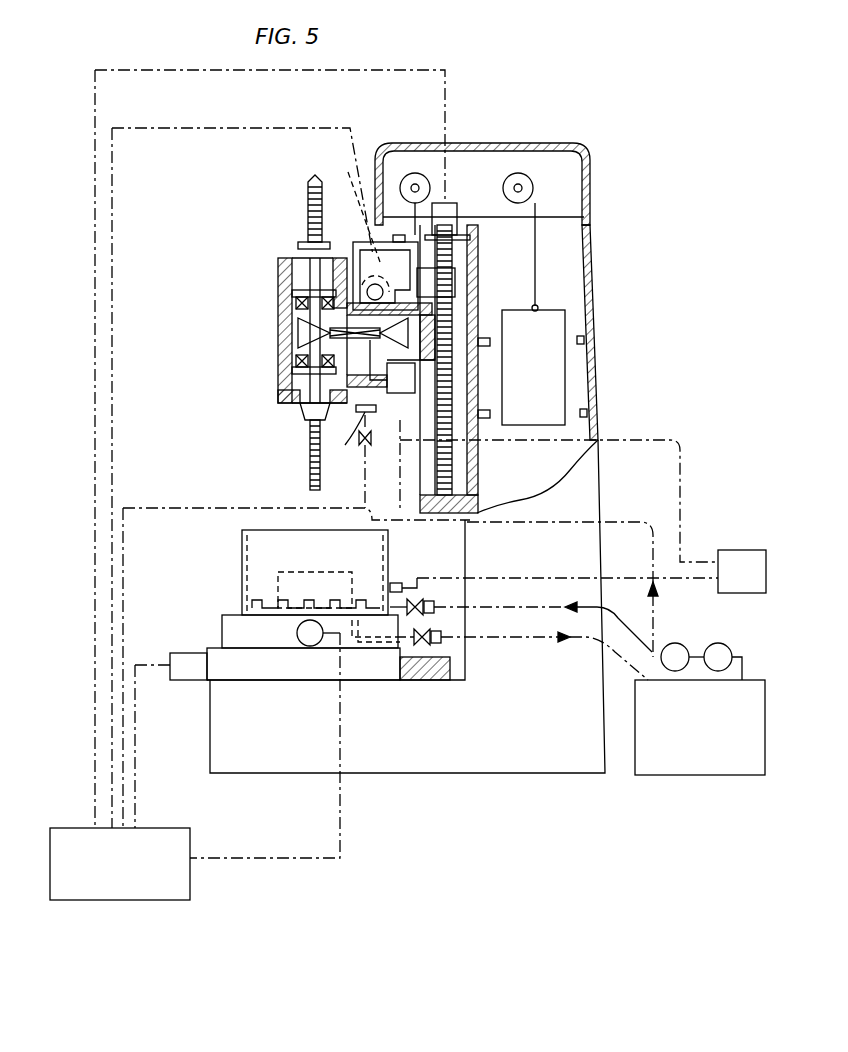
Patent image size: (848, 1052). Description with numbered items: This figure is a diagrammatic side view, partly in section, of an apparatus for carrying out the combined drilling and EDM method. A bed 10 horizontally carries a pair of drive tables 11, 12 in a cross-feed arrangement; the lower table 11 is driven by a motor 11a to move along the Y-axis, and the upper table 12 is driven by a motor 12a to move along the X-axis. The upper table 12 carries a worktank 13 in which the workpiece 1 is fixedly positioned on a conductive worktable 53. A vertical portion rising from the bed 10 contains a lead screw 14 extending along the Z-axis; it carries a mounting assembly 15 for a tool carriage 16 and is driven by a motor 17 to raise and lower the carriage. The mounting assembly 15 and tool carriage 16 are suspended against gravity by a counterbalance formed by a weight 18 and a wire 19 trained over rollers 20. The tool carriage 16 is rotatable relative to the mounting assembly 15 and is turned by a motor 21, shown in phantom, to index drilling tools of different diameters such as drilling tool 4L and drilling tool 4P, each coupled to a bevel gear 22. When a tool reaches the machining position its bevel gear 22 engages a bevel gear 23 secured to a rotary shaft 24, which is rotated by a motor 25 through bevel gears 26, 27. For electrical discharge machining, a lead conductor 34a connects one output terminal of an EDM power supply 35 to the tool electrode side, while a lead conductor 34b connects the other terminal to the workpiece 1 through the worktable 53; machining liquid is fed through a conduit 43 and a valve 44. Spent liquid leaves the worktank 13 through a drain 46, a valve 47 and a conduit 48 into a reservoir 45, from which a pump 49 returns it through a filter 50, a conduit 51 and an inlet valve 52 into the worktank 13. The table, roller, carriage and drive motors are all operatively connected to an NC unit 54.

The workpiece 1 is at (303, 572).
The drilling tool 4L is at (305, 200).
The drilling tool 4P is at (308, 442).
The bed 10 is at (372, 775).
The drive table 11 is at (215, 670).
The motor 11a is at (185, 653).
The drive table 12 is at (222, 622).
The motor 12a is at (308, 646).
The worktank 13 is at (258, 530).
The lead screw 14 is at (452, 470).
The mounting assembly 15 is at (357, 252).
The tool carriage 16 is at (280, 335).
The motor 17 is at (449, 215).
The weight 18 is at (555, 323).
The wire 19 is at (462, 152).
The rollers 20 is at (415, 173).
The motor 21 is at (348, 212).
The bevel gear 22 is at (296, 305).
The bevel gear 23 is at (300, 330).
The rotary shaft 24 is at (345, 434).
The motor 25 is at (408, 378).
The bevel gear 26 is at (436, 282).
The bevel gear 27 is at (440, 338).
The lead conductor 34a is at (642, 438).
The lead conductor 34b is at (505, 578).
The EDM power supply 35 is at (737, 550).
The conduit 43 is at (636, 520).
The valve 44 is at (348, 462).
The reservoir 45 is at (648, 776).
The drain 46 is at (378, 648).
The valve 47 is at (438, 630).
The conduit 48 is at (595, 655).
The pump 49 is at (733, 643).
The filter 50 is at (685, 643).
The conduit 51 is at (606, 617).
The inlet valve 52 is at (432, 600).
The conductive worktable 53 is at (262, 600).
The NC unit 54 is at (192, 828).